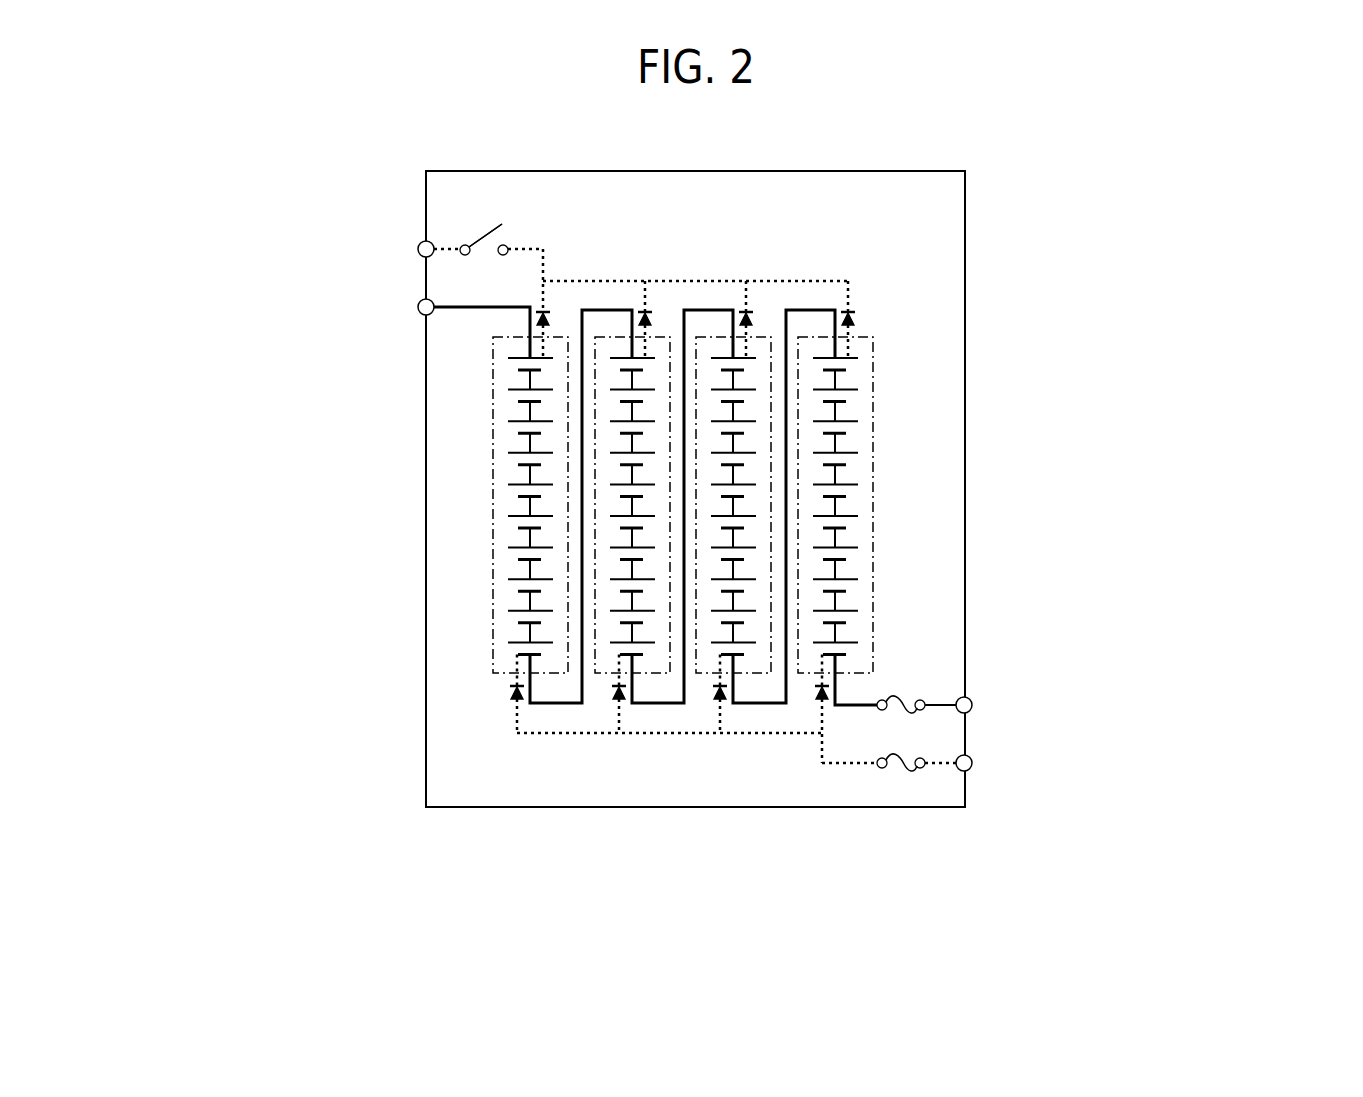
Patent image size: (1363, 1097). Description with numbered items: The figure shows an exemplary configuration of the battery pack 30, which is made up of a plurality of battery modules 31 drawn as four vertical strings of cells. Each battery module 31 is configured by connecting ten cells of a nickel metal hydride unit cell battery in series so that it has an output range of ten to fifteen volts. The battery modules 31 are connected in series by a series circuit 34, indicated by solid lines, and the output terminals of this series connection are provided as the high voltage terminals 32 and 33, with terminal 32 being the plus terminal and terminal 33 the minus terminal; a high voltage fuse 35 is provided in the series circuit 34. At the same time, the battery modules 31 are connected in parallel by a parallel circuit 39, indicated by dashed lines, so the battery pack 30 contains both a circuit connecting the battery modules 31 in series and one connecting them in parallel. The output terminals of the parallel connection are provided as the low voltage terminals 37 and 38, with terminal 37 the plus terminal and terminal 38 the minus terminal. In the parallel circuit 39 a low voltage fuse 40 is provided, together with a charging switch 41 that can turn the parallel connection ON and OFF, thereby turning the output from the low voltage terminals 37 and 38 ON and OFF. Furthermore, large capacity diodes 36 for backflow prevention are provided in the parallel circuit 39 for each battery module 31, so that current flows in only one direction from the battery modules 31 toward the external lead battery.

The battery pack 30 is at (864, 171).
The battery module 31 is at (492, 372).
The high voltage terminal 32 is at (418, 306).
The high voltage terminal 33 is at (972, 705).
The series circuit 34 is at (455, 329).
The high voltage fuse 35 is at (898, 698).
The large capacity diode 36 is at (549, 320).
The low voltage terminal 37 is at (418, 249).
The low voltage terminal 38 is at (972, 763).
The parallel circuit 39 is at (534, 226).
The low voltage fuse 40 is at (903, 771).
The charging switch 41 is at (482, 232).